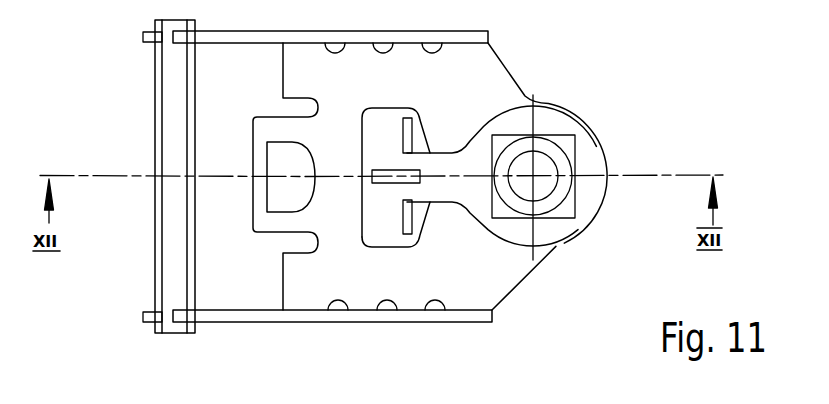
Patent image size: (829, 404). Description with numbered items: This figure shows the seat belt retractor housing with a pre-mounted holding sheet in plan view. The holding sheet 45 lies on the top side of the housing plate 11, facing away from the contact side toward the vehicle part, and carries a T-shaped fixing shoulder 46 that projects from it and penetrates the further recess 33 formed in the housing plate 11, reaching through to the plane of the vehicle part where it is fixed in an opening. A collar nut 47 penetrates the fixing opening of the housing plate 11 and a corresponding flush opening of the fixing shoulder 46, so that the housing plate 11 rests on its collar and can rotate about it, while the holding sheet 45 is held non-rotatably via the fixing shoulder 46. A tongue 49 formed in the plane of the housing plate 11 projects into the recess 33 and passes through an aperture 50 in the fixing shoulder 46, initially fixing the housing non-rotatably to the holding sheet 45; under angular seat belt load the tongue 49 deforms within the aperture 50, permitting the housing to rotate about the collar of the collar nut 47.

The housing plate 11 is at (318, 268).
The further recess 33 is at (383, 220).
The holding sheet 45 is at (460, 158).
The T-shaped fixing shoulder 46 is at (412, 130).
The collar nut 47 is at (560, 155).
The tongue 49 is at (383, 183).
The aperture 50 is at (422, 185).